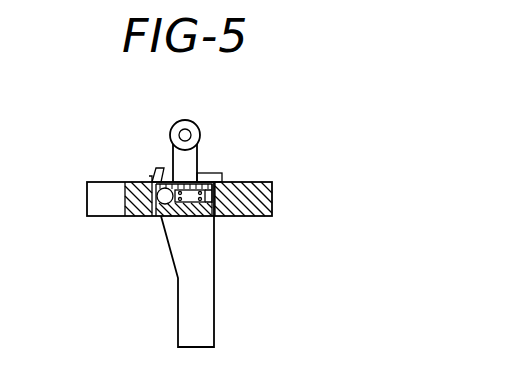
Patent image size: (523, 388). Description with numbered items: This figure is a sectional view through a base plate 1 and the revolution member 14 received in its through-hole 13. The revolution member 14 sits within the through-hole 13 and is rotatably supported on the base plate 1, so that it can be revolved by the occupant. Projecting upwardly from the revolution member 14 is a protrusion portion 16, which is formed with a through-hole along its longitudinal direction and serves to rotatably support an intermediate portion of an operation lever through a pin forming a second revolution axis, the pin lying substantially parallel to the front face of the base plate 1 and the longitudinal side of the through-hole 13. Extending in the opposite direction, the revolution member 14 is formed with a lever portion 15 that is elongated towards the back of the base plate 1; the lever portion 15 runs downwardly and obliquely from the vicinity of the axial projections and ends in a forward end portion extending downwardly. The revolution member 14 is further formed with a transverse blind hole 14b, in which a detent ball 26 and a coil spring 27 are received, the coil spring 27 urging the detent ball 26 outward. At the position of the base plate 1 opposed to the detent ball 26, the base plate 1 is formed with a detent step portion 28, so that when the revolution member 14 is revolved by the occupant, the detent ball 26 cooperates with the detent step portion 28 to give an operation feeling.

The base plate 1 is at (262, 182).
The through-hole 13 is at (215, 222).
The revolution member 14 is at (160, 252).
The transverse blind hole 14b is at (190, 217).
The lever portion 15 is at (178, 312).
The protrusion portion 16 is at (198, 156).
The detent ball 26 is at (160, 218).
The coil spring 27 is at (215, 242).
The detent step portion 28 is at (162, 170).